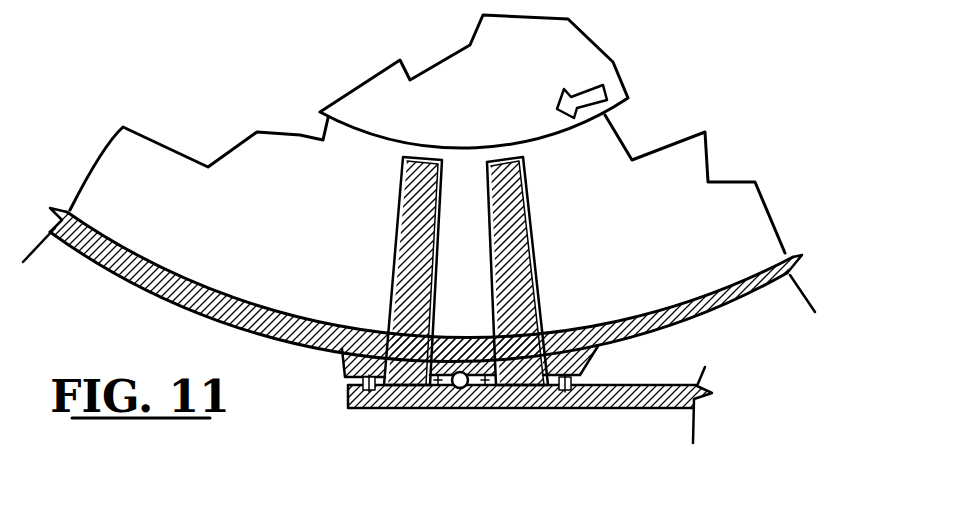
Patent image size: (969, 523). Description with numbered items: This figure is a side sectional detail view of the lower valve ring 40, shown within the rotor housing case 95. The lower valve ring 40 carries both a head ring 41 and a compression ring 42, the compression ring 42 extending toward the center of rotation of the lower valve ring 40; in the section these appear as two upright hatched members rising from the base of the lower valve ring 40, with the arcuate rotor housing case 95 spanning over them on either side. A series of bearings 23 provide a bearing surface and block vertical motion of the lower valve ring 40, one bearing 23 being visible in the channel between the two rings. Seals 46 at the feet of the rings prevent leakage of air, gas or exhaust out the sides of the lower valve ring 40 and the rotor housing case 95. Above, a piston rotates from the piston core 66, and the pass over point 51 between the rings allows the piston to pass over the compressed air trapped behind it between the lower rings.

The piston core 66 is at (443, 129).
The rotor housing case 95 is at (712, 313).
The compression ring 42 is at (392, 287).
The head ring 41 is at (525, 218).
The pass over point 51 is at (448, 338).
The lower valve ring 40 is at (642, 410).
The bearing 23 is at (460, 388).
The seals 46 is at (352, 390).